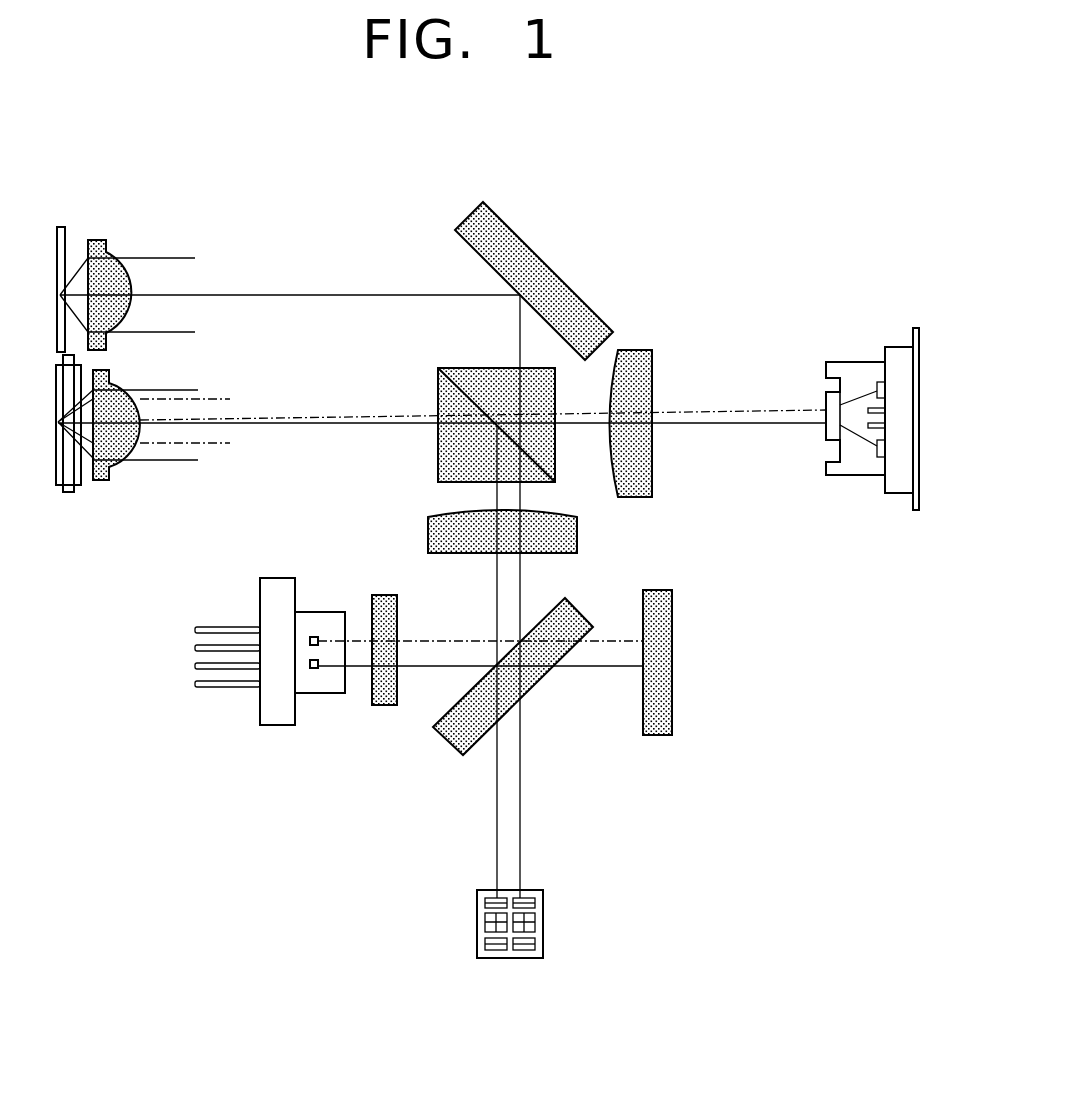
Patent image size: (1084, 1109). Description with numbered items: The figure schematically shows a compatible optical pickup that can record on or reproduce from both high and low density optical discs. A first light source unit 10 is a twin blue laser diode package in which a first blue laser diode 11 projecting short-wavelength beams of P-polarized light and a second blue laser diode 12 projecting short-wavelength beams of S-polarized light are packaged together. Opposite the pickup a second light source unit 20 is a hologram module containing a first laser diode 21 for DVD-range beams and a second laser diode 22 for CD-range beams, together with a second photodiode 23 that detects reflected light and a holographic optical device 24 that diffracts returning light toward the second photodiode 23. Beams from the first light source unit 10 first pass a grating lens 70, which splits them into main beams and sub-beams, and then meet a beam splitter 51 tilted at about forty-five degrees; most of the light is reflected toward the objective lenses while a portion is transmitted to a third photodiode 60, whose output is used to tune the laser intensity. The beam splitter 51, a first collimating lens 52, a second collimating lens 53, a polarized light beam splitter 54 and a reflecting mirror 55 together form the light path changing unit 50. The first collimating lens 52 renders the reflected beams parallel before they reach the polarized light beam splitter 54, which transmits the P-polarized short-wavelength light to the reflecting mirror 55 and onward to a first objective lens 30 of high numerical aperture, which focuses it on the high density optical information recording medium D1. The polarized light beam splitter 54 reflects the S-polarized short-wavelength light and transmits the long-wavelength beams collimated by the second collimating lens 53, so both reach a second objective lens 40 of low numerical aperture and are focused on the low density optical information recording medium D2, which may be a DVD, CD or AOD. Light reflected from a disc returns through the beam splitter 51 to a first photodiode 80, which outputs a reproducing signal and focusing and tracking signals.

The first light source unit 10 is at (419, 683).
The first blue laser diode 11 is at (314, 637).
The second blue laser diode 12 is at (314, 668).
The second light source unit 20 is at (880, 434).
The first laser diode 21 is at (885, 430).
The second laser diode 22 is at (885, 410).
The second photodiode 23 is at (880, 382).
The holographic optical device 24 is at (830, 398).
The first objective lens 30 is at (97, 240).
The second objective lens 40 is at (103, 482).
The light path changing unit 50 is at (633, 318).
The beam splitter 51 is at (580, 608).
The first collimating lens 52 is at (572, 531).
The second collimating lens 53 is at (648, 360).
The polarized light beam splitter 54 is at (438, 376).
The reflecting mirror 55 is at (483, 202).
The third photodiode 60 is at (662, 610).
The grating lens 70 is at (384, 706).
The first photodiode 80 is at (537, 924).
The high density optical information recording medium D1 is at (62, 226).
The low density optical information recording medium D2 is at (65, 494).